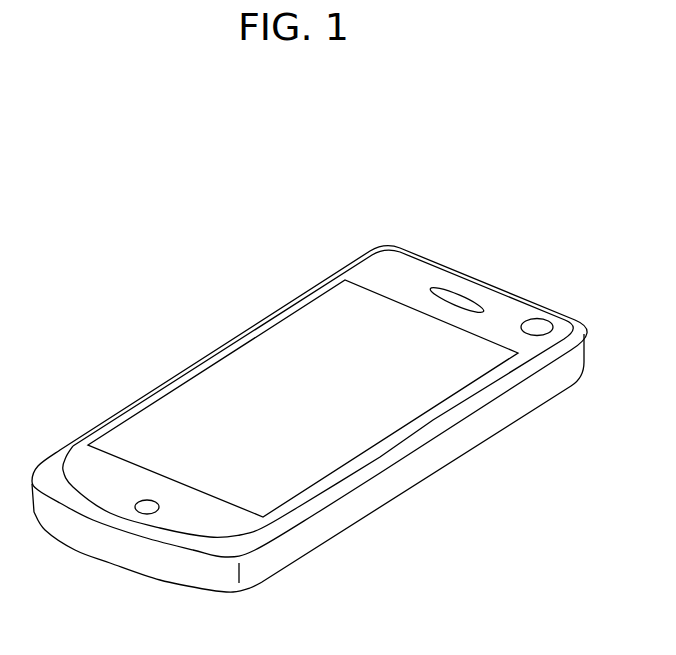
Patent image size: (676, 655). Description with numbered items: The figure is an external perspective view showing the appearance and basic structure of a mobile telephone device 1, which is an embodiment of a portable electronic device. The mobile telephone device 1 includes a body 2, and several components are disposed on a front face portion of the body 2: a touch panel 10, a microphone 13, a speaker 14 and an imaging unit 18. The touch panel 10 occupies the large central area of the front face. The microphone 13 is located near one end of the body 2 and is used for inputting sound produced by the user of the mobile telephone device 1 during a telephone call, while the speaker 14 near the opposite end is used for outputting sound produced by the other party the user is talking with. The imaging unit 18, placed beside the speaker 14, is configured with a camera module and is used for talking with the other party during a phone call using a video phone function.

The mobile telephone device 1 is at (425, 189).
The body 2 is at (369, 268).
The touch panel 10 is at (260, 348).
The microphone 13 is at (140, 507).
The speaker 14 is at (458, 300).
The imaging unit 18 is at (541, 324).